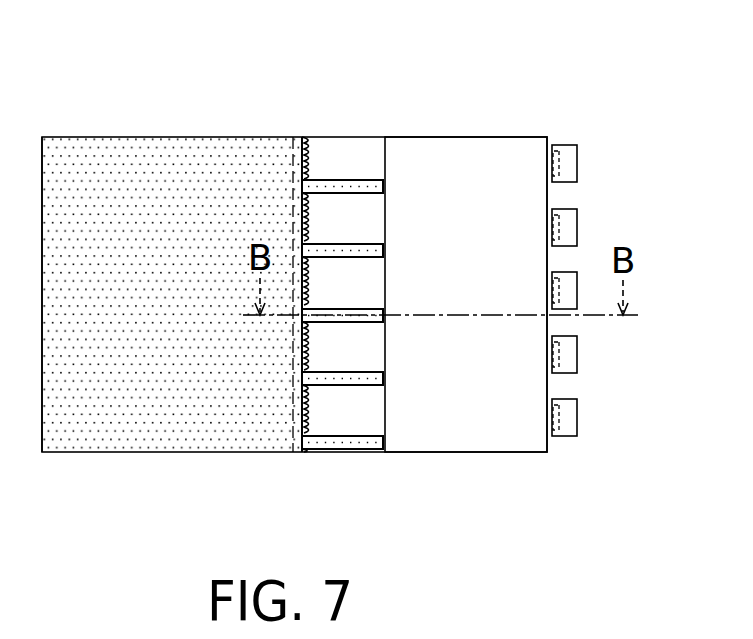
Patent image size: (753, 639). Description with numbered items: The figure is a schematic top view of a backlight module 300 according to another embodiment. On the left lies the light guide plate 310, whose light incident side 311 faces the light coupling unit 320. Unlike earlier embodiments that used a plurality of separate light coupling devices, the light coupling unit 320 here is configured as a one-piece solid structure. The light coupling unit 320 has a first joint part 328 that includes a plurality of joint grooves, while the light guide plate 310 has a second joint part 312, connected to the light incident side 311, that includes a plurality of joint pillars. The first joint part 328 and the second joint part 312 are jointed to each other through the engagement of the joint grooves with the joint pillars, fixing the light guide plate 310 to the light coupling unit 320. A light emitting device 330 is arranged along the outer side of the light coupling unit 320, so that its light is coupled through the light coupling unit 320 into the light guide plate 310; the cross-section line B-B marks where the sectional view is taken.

The backlight module 300 is at (708, 486).
The light guide plate 310 is at (165, 137).
The light incident side 311 is at (296, 169).
The second joint part 312 is at (328, 190).
The light coupling unit 320 is at (462, 152).
The first joint part 328 is at (370, 177).
The light emitting device 330 is at (568, 163).